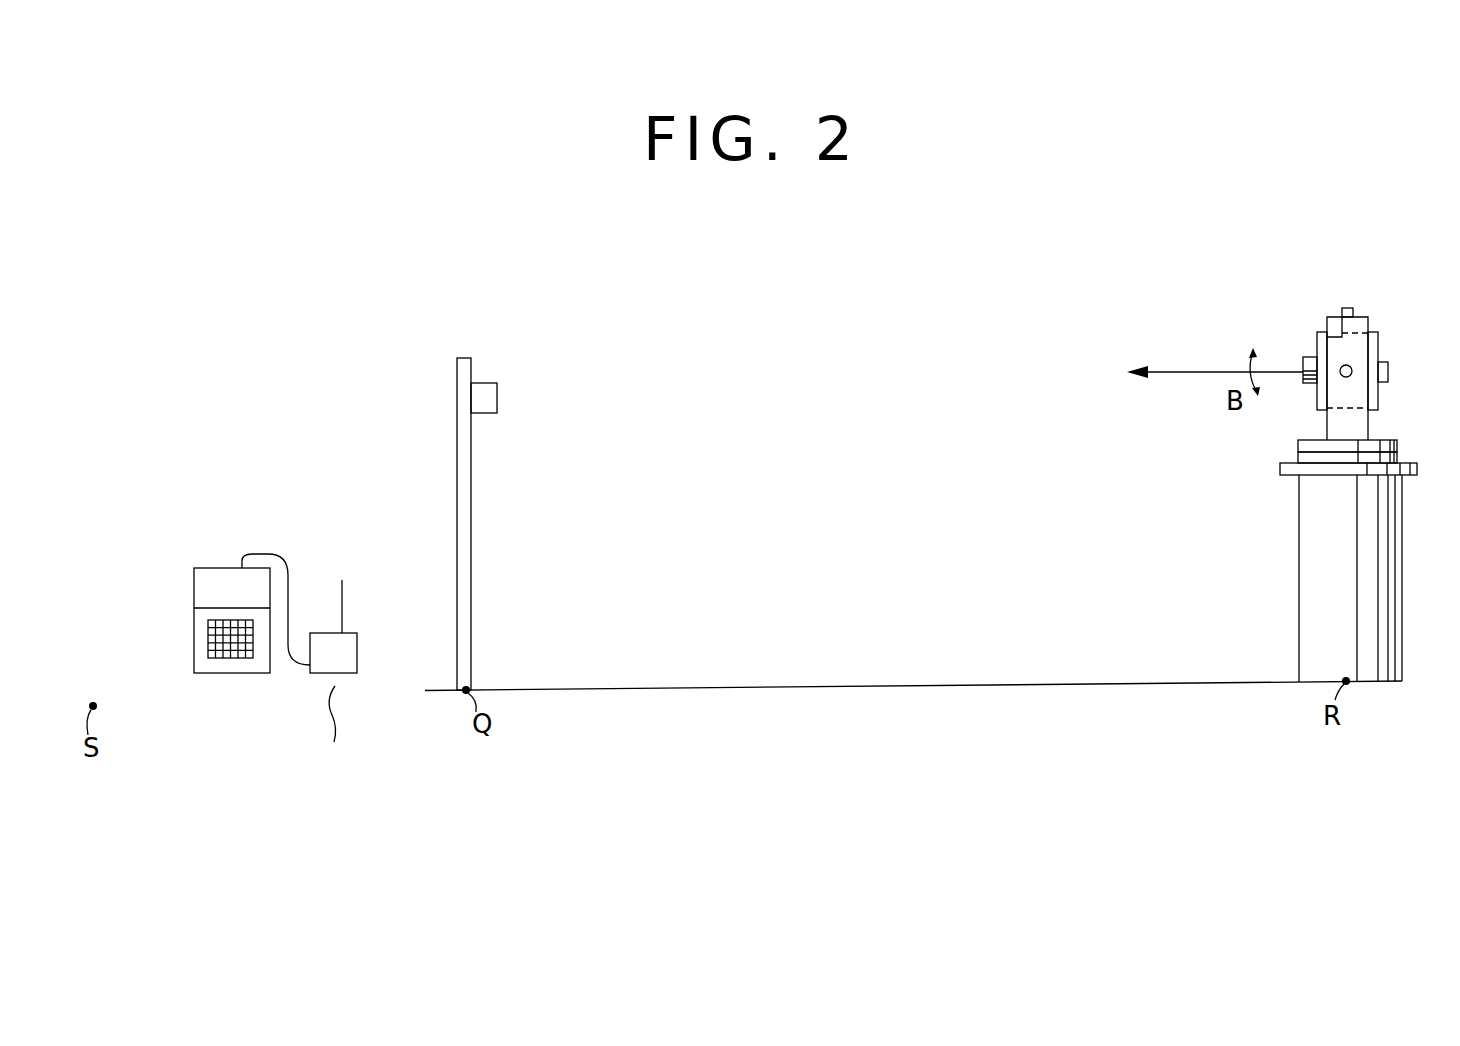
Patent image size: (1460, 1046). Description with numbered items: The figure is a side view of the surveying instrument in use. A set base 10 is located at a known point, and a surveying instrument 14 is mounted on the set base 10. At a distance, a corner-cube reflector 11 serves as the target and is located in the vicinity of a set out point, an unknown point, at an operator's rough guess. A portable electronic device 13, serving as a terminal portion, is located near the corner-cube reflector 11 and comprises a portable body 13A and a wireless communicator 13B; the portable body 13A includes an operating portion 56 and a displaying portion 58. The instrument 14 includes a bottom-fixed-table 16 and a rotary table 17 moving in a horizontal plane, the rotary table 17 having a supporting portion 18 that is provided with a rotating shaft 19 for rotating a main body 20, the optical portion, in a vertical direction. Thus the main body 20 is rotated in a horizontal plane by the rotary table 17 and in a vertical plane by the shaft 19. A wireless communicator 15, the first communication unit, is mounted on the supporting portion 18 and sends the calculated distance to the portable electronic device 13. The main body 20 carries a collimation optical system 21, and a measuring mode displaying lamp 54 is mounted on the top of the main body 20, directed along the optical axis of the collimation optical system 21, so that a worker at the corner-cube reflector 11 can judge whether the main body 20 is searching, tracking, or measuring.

The set base 10 is at (1305, 553).
The corner-cube reflector 11 is at (497, 400).
The portable electronic device 13 is at (281, 468).
The portable body 13A is at (173, 642).
The wireless communicator 13B is at (345, 652).
The surveying instrument 14 is at (1345, 298).
The wireless communicator 15 is at (1327, 322).
The bottom-fixed-table 16 is at (1302, 457).
The rotary table 17 is at (1300, 445).
The supporting portion 18 is at (1362, 317).
The rotating shaft 19 is at (1350, 367).
The main body 20 is at (1378, 382).
The collimation optical system 21 is at (1308, 386).
The measuring mode displaying lamp 54 is at (1352, 308).
The operating portion 56 is at (163, 576).
The displaying portion 58 is at (230, 660).